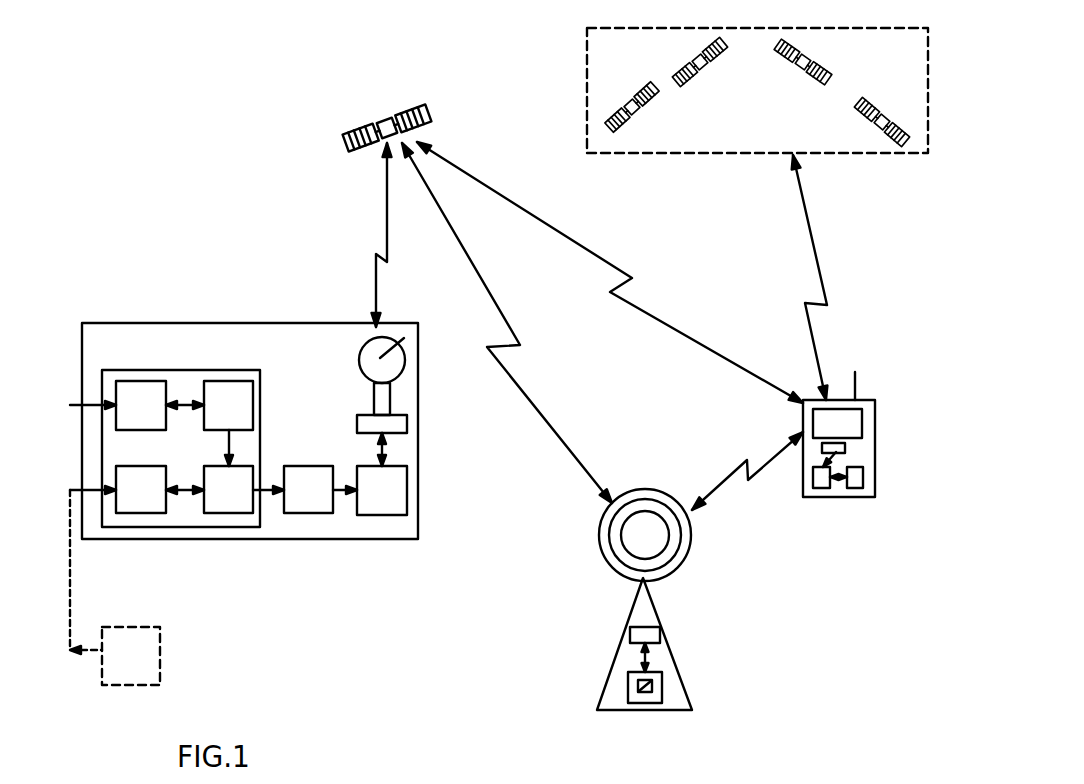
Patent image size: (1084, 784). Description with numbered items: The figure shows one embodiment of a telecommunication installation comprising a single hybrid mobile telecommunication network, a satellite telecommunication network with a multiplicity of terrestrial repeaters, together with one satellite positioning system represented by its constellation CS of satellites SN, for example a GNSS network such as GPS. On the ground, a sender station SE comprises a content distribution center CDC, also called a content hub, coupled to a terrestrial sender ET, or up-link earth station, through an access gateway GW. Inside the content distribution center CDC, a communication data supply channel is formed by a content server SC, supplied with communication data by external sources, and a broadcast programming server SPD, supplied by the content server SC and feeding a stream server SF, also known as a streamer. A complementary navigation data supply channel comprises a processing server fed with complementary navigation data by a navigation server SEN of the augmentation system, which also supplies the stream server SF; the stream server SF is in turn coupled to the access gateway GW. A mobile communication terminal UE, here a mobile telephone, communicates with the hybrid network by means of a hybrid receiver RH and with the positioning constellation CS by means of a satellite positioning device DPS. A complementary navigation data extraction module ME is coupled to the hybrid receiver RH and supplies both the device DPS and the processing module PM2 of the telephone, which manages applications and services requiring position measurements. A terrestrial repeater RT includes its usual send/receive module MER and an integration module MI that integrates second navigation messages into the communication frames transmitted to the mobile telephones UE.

The satellites SN is at (675, 63).
The constellation CS is at (718, 119).
The sender station SE is at (273, 323).
The content distribution center CDC is at (162, 365).
The content server SC is at (140, 388).
The broadcast programming server SPD is at (242, 388).
The stream server SF is at (242, 513).
The access gateway GW is at (318, 513).
The terrestrial sender ET is at (382, 392).
The navigation server SEN is at (160, 663).
The mobile communication terminal UE is at (875, 405).
The hybrid receiver RH is at (856, 453).
The complementary navigation data extraction module ME is at (828, 489).
The satellite positioning device DPS is at (855, 489).
The terrestrial repeater RT is at (643, 579).
The send/receive module MER is at (657, 631).
The processing module PM2 is at (660, 676).
The integration module MI is at (645, 688).